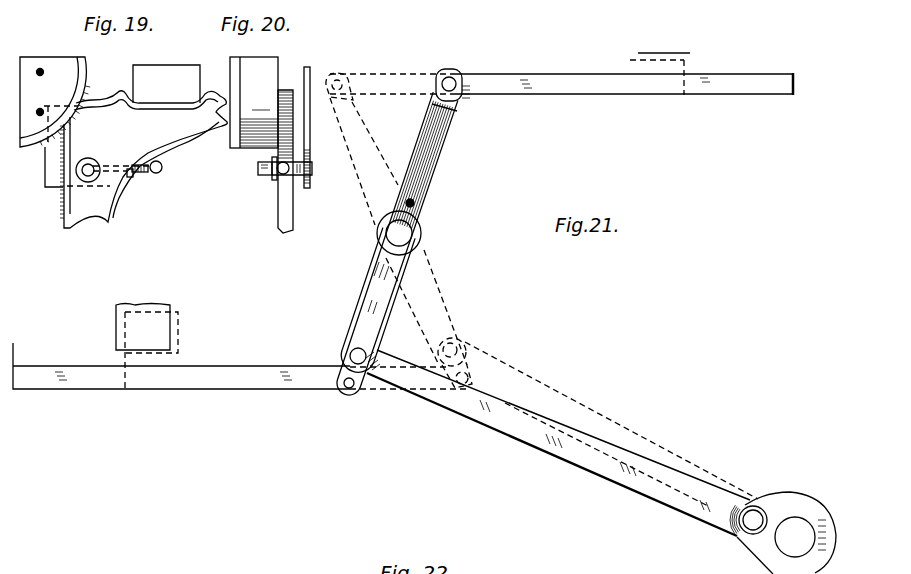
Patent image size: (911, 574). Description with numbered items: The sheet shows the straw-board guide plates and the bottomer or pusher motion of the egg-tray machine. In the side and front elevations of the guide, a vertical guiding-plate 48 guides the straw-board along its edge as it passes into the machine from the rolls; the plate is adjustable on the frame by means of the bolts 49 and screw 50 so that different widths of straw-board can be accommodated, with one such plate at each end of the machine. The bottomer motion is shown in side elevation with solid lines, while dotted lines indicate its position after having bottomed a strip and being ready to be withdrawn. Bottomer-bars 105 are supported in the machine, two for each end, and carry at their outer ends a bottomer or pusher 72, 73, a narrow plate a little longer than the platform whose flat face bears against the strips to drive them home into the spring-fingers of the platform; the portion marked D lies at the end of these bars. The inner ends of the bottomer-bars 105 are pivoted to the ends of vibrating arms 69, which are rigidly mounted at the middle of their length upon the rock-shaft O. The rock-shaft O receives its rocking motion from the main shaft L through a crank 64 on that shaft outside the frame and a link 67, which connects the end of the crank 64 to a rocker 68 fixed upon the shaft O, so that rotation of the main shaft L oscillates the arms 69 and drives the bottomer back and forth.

In FIG. 19, the vertical guiding-plate 48 is at (166, 84).
In FIG. 20, the vertical guiding-plate 48 is at (308, 166).
In FIG. 19, the bolt 49 is at (88, 172).
In FIG. 20, the bolt 49 is at (265, 177).
In FIG. 19, the screw 50 is at (155, 173).
In FIG. 21, the bottomer-bar 105 is at (403, 231).
In FIG. 21, the bottomer or pusher 72 is at (709, 65).
In FIG. 21, the bottomer or pusher 73 is at (135, 412).
In FIG. 21, the vibrating arm 69 is at (431, 185).
In FIG. 21, the rocker 68 is at (371, 278).
In FIG. 21, the link 67 is at (557, 452).
In FIG. 21, the crank 64 is at (765, 556).
In FIG. 21, the rock-shaft O is at (408, 233).
In FIG. 21, the main shaft L is at (797, 537).
In FIG. 21, the block D is at (147, 329).